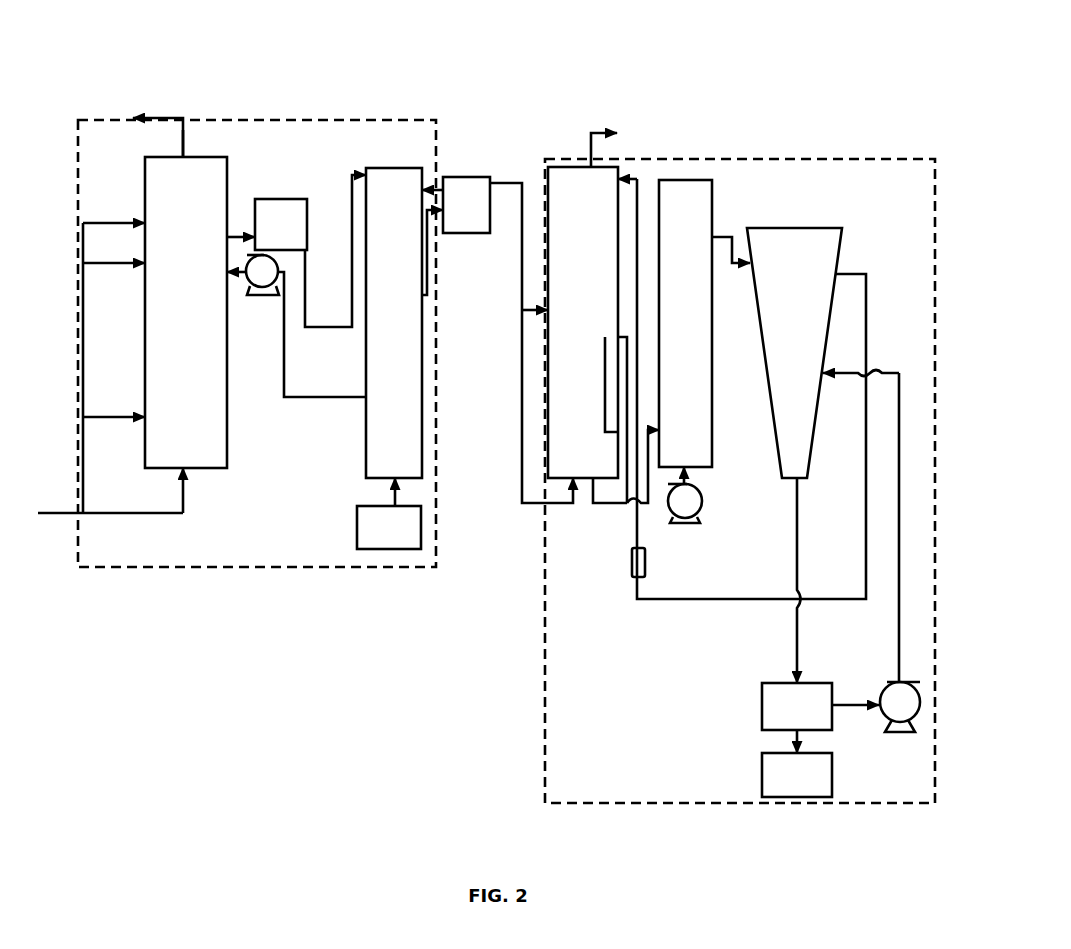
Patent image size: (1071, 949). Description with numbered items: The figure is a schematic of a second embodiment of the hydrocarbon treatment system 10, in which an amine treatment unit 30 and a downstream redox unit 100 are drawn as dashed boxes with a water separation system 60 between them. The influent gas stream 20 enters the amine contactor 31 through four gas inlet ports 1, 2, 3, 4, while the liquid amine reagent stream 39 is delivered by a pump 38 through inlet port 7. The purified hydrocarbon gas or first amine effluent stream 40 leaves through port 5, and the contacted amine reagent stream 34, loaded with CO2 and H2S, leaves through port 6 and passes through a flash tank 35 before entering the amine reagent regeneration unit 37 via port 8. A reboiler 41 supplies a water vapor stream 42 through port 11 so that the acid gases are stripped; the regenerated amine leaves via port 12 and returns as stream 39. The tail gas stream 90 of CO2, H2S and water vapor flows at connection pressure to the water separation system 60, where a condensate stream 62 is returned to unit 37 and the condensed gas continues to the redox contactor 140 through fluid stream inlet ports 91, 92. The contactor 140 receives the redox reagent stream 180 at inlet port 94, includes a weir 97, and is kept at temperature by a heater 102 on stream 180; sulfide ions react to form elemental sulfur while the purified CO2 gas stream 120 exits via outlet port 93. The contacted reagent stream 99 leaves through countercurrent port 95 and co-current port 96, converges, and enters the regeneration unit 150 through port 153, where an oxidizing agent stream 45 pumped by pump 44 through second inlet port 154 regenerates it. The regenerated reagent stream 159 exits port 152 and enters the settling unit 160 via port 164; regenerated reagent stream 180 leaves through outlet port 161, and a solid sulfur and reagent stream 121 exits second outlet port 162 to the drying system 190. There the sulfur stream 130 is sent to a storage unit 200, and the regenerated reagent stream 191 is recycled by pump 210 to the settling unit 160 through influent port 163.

The hydrocarbon treatment system 10 is at (508, 111).
The influent gas stream 20 is at (53, 515).
The amine treatment unit 30 is at (279, 118).
The first amine effluent stream 40 is at (166, 116).
The redox unit 100 is at (750, 157).
The CO2 gas stream 120 is at (593, 132).
The gas inlet port 1 is at (143, 228).
The gas inlet port 2 is at (143, 268).
The gas inlet port 3 is at (143, 422).
The gas inlet port 4 is at (187, 472).
The outlet port 5 is at (187, 156).
The outlet port 6 is at (231, 239).
The inlet port 7 is at (230, 278).
The port 8 is at (362, 170).
The port 11 is at (387, 482).
The port 12 is at (368, 397).
The amine contactor 31 is at (174, 294).
The contacted amine reagent stream 34 is at (238, 233).
The flash tank 35 is at (269, 236).
The amine reagent regeneration unit 37 is at (382, 294).
The pump 38 is at (250, 282).
The amine reagent stream 39 is at (284, 381).
The reboiler 41 is at (377, 540).
The water vapor stream 42 is at (398, 496).
The pump 44 is at (673, 512).
The oxidizing agent stream 45 is at (698, 487).
The water separation system 60 is at (455, 216).
The condensate stream 62 is at (433, 184).
The tail gas stream 90 is at (428, 291).
The fluid stream inlet port 91 is at (543, 318).
The fluid stream inlet port 92 is at (573, 477).
The outlet port 93 is at (588, 162).
The inlet port 94 is at (613, 184).
The countercurrent port 95 is at (621, 335).
The co-current port 96 is at (595, 477).
The weir 97 is at (604, 373).
The contacted reagent stream 99 is at (627, 504).
The heater 102 is at (631, 565).
The solid sulfur and reagent stream 121 is at (798, 575).
The sulfur stream 130 is at (798, 640).
The redox contactor 140 is at (565, 340).
The regeneration unit 150 is at (666, 298).
The port 152 is at (712, 238).
The port 153 is at (659, 430).
The second inlet port 154 is at (687, 463).
The regenerated reagent stream 159 is at (724, 236).
The settling unit 160 is at (775, 310).
The outlet port 161 is at (838, 270).
The second outlet port 162 is at (798, 481).
The influent port 163 is at (824, 382).
The port 164 is at (748, 268).
The regenerated reagent stream 180 is at (867, 311).
The drying system 190 is at (779, 717).
The regenerated reagent stream 191 is at (899, 372).
The storage unit 200 is at (779, 785).
The pump 210 is at (882, 713).